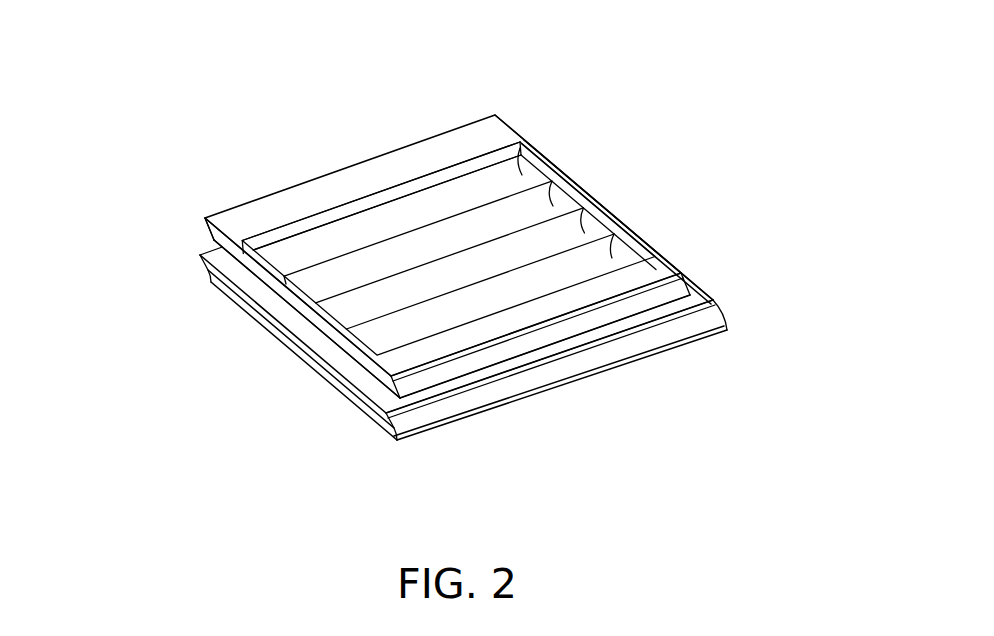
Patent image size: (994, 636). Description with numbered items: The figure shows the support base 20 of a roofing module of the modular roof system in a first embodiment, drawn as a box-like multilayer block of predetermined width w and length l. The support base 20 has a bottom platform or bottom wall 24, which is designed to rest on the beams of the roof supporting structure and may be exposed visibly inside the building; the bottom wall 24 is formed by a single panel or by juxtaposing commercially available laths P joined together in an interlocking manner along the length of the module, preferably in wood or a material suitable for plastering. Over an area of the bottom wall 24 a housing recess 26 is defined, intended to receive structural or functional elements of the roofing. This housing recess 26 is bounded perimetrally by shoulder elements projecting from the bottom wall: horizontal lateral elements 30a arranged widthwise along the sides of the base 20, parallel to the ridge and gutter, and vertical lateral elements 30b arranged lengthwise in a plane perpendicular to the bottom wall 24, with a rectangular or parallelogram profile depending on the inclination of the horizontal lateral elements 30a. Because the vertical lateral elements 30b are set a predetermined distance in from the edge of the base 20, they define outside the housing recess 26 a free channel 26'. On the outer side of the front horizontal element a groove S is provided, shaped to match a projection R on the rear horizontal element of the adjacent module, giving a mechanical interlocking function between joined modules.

The support base 20 is at (538, 114).
The bottom wall 24 is at (608, 262).
The housing recess 26 is at (447, 228).
The free channel 26' is at (510, 382).
The horizontal lateral elements 30a is at (397, 192).
The vertical lateral elements 30b is at (272, 280).
The laths P is at (533, 143).
The projection R is at (206, 242).
The groove S is at (680, 312).
The length l is at (369, 447).
The width w is at (745, 343).